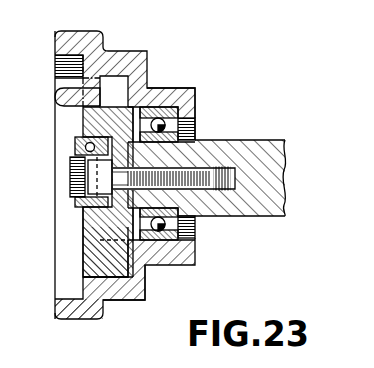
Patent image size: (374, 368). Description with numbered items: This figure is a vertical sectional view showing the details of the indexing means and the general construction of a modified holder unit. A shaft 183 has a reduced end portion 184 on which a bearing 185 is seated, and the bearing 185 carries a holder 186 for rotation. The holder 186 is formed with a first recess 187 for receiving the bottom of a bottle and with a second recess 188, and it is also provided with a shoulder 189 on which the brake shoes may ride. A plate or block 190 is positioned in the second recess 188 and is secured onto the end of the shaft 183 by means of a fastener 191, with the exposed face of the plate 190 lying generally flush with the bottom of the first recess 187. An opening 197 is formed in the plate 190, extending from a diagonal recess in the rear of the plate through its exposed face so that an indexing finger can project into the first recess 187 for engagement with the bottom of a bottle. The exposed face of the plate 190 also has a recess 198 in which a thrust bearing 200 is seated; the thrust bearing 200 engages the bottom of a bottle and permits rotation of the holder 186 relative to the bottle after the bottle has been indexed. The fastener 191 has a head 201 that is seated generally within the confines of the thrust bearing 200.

The shaft 183 is at (244, 143).
The reduced end portion 184 is at (203, 218).
The bearing 185 is at (168, 89).
The holder 186 is at (148, 62).
The first recess 187 is at (63, 286).
The second recess 188 is at (112, 300).
The shoulder 189 is at (115, 52).
The plate or block 190 is at (83, 262).
The fastener 191 is at (204, 170).
The opening 197 is at (80, 78).
The recess 198 is at (86, 226).
The thrust bearing 200 is at (70, 147).
The head 201 is at (88, 174).